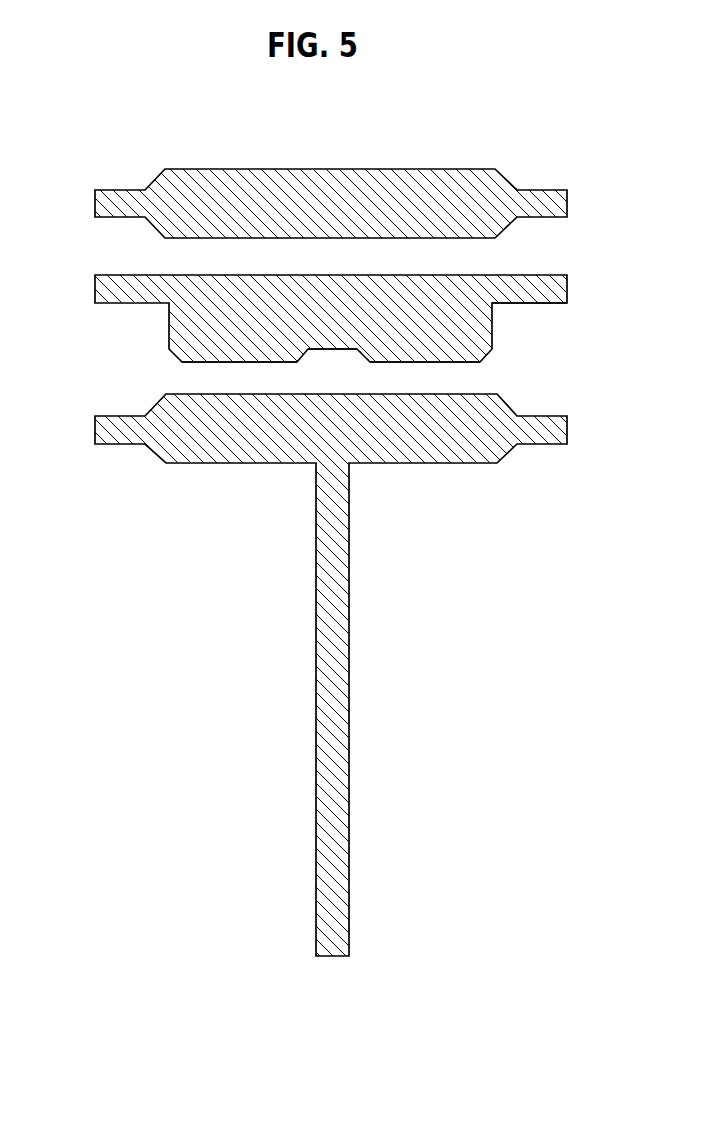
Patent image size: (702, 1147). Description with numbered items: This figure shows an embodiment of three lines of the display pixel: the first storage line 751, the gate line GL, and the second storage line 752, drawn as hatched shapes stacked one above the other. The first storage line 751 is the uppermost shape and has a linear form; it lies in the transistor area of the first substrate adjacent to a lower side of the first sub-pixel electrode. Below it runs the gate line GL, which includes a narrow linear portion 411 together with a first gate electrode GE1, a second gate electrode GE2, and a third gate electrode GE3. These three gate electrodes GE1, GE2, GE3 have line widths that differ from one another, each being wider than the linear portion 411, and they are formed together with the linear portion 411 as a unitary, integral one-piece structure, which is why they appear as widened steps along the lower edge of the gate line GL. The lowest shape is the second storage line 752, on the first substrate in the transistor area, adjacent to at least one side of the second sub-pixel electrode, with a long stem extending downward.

The first storage line 751 is at (333, 195).
The second storage line 752 is at (333, 530).
The gate line GL is at (109, 271).
The linear portion 411 is at (531, 289).
The first gate electrode GE1 is at (235, 350).
The second gate electrode GE2 is at (329, 326).
The third gate electrode GE3 is at (430, 351).